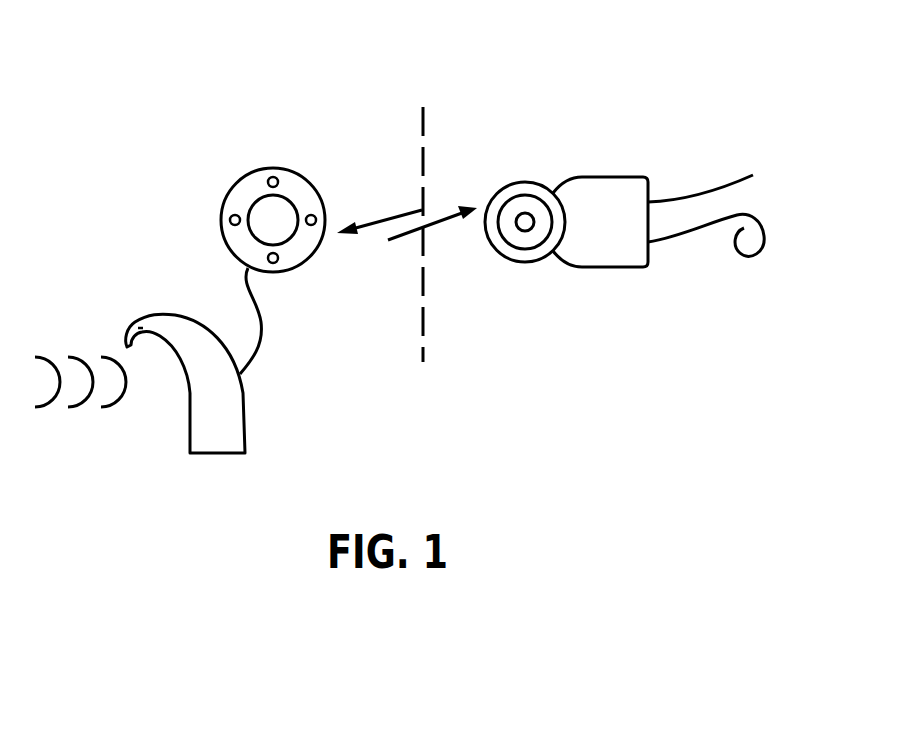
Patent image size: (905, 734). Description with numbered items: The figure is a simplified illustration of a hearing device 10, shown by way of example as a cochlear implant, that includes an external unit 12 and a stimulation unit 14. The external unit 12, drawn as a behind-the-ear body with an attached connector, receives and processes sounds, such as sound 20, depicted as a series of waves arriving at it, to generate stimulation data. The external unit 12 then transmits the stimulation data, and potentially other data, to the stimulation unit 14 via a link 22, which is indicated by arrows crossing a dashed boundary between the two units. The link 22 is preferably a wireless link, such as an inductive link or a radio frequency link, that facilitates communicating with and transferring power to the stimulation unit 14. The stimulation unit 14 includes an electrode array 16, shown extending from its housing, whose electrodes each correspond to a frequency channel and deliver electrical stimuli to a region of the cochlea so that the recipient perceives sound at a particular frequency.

The hearing device 10 is at (643, 95).
The external unit 12 is at (246, 407).
The stimulation unit 14 is at (602, 177).
The electrode array 16 is at (668, 243).
The sound 20 is at (70, 358).
The link 22 is at (388, 240).